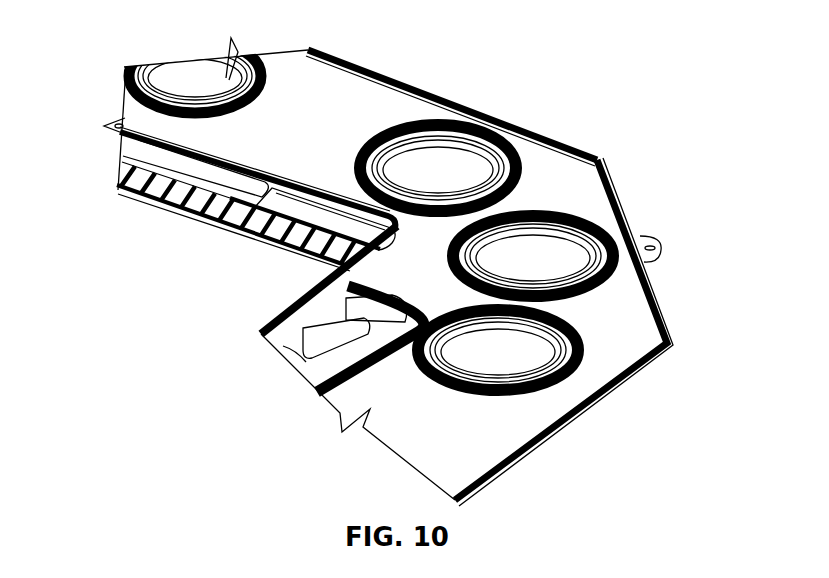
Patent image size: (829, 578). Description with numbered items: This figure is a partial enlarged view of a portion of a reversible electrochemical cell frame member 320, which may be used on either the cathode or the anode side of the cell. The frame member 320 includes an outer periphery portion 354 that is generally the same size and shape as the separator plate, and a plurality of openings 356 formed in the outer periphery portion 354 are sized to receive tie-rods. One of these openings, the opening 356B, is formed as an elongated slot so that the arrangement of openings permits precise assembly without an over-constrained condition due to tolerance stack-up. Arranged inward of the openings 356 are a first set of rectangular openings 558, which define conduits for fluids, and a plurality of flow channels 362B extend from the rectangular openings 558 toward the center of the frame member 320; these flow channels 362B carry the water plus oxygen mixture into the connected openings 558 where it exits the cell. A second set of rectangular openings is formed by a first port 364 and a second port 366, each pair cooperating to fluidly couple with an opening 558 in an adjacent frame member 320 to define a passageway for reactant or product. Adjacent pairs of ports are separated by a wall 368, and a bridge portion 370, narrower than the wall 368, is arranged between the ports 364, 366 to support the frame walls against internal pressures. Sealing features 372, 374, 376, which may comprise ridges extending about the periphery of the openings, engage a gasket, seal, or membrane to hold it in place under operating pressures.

The frame member 320 is at (586, 437).
The outer periphery portion 354 is at (530, 150).
The openings 356 is at (167, 82).
The opening 356B is at (523, 258).
The flow channels 362B is at (130, 200).
The first port 364 is at (338, 347).
The second port 366 is at (341, 271).
The wall 368 is at (357, 368).
The bridge portion 370 is at (380, 312).
The sealing feature 372 is at (590, 360).
The sealing feature 374 is at (273, 176).
The sealing feature 376 is at (352, 388).
The rectangular openings 558 is at (232, 184).